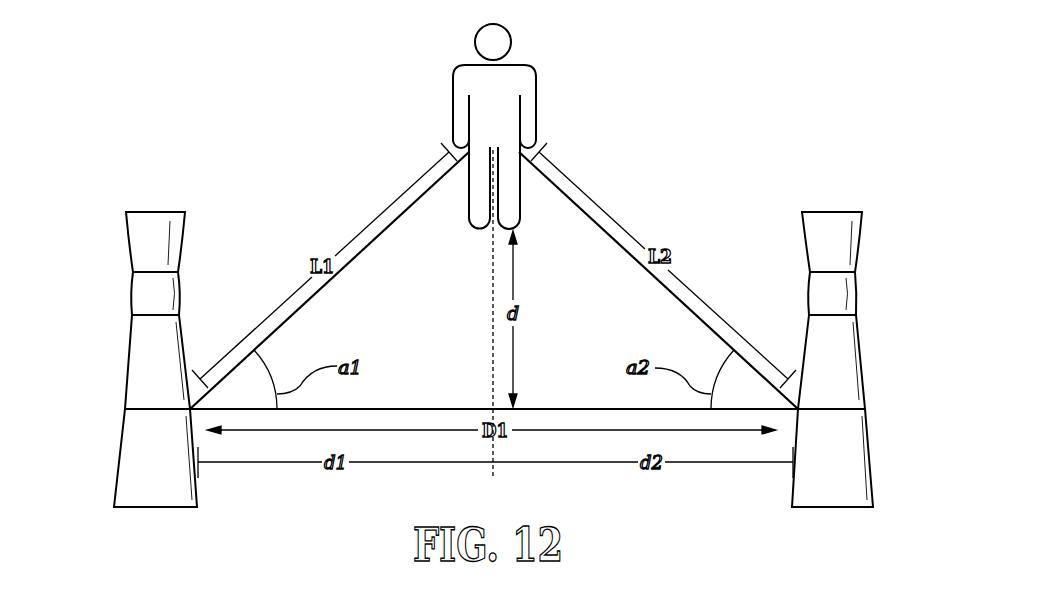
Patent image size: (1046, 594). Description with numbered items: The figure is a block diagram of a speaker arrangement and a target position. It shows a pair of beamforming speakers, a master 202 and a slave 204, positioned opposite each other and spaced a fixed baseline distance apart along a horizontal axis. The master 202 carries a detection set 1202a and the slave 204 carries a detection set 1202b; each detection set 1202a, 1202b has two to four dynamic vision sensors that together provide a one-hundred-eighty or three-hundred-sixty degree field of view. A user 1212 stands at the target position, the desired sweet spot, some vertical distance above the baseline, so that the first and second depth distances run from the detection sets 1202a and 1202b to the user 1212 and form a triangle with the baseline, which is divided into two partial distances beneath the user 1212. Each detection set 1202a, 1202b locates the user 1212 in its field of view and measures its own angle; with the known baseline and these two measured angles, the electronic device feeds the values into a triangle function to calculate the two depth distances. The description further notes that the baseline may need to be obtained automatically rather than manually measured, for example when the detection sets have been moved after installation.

The user / listener 1212 is at (518, 64).
The detection set 1202a is at (130, 262).
The detection set 1202b is at (860, 251).
The master loudspeaker 202 is at (120, 359).
The slave loudspeaker 204 is at (876, 357).